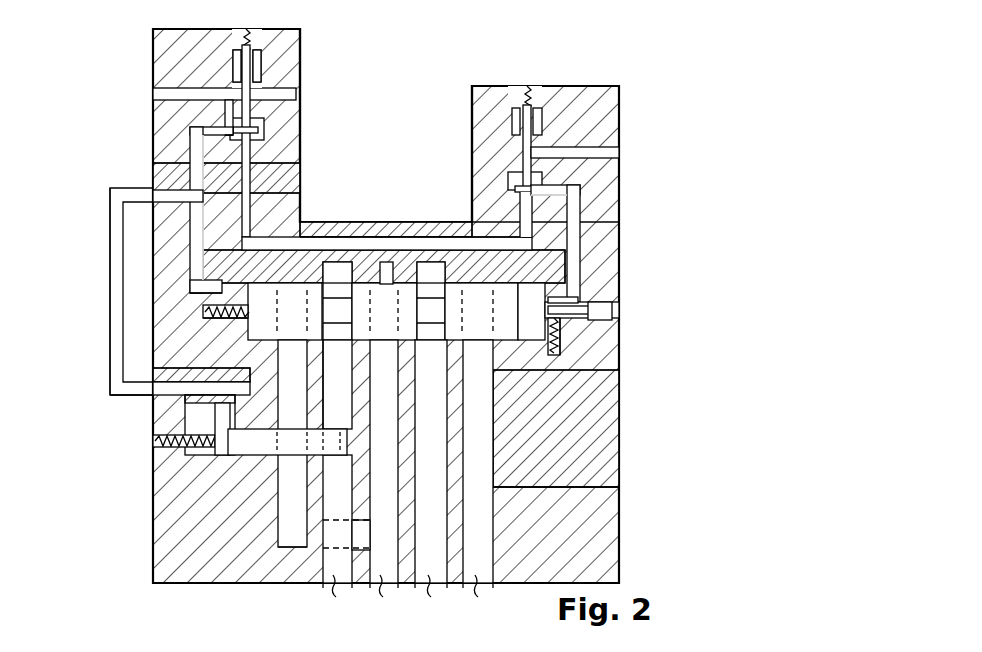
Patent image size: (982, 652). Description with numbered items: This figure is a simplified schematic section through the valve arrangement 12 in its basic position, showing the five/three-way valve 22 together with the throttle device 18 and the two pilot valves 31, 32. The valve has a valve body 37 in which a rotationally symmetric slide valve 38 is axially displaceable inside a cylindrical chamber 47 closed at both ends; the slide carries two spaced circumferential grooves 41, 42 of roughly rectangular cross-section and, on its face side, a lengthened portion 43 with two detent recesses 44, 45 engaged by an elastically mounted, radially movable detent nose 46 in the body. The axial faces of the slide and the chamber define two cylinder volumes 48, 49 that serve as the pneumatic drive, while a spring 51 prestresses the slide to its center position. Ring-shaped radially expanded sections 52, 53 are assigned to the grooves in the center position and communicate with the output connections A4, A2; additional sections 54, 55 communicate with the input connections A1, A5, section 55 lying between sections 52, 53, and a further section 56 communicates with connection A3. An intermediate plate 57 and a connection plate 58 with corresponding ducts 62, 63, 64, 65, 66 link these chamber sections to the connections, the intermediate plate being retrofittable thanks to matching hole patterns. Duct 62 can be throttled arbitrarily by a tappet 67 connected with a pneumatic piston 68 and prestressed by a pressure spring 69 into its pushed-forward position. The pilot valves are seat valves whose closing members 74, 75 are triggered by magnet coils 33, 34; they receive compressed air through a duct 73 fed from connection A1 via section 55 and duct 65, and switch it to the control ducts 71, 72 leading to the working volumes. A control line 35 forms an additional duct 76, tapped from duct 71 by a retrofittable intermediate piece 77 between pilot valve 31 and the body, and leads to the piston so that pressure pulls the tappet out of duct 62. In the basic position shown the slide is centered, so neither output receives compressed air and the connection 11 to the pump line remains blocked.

The valve arrangement 12 is at (648, 292).
The 5/3-way valve 22 is at (622, 352).
The pilot valve 31 is at (304, 69).
The pilot valve 32 is at (658, 110).
The magnet coil 34 is at (560, 86).
The magnet coil 33 is at (262, 56).
The valve closing member 74 is at (252, 90).
The valve closing member 75 is at (508, 142).
The intermediate piece 77 is at (165, 178).
The duct 76 is at (118, 226).
The control duct 71 is at (196, 252).
The control line 35 is at (110, 320).
The cylinder volume 48 is at (236, 292).
The duct 73 is at (362, 245).
The cylinder volume 49 is at (574, 252).
The valve body 37 is at (604, 270).
The slide valve 38 is at (386, 265).
The circumferential groove 41 is at (337, 265).
The circumferential groove 42 is at (431, 265).
The spring 51 is at (215, 312).
The cylindrical chamber 47 is at (236, 327).
The chamber section 54 is at (304, 364).
The chamber section 52 is at (349, 364).
The chamber section 55 is at (394, 364).
The chamber section 53 is at (442, 364).
The chamber section 56 is at (489, 364).
The duct 62 is at (349, 393).
The duct 64 is at (304, 416).
The duct 65 is at (394, 416).
The duct 63 is at (442, 416).
The duct 66 is at (489, 416).
The detent recess 44 is at (532, 322).
The detent nose 46 is at (553, 358).
The detent recess 45 is at (568, 330).
The lengthened portion 43 is at (602, 314).
The control duct 72 is at (575, 284).
The pressure spring 69 is at (160, 440).
The throttle device 18 is at (132, 449).
The pneumatic piston 68 is at (222, 452).
The tappet 67 is at (262, 508).
The intermediate plate 57 is at (605, 452).
The connection plate 58 is at (610, 552).
The input connection A5 is at (306, 543).
The output connection A4 is at (350, 416).
The connection 11 is at (337, 540).
The input connection A1 is at (383, 600).
The output connection A2 is at (431, 600).
The connection A3 is at (478, 600).